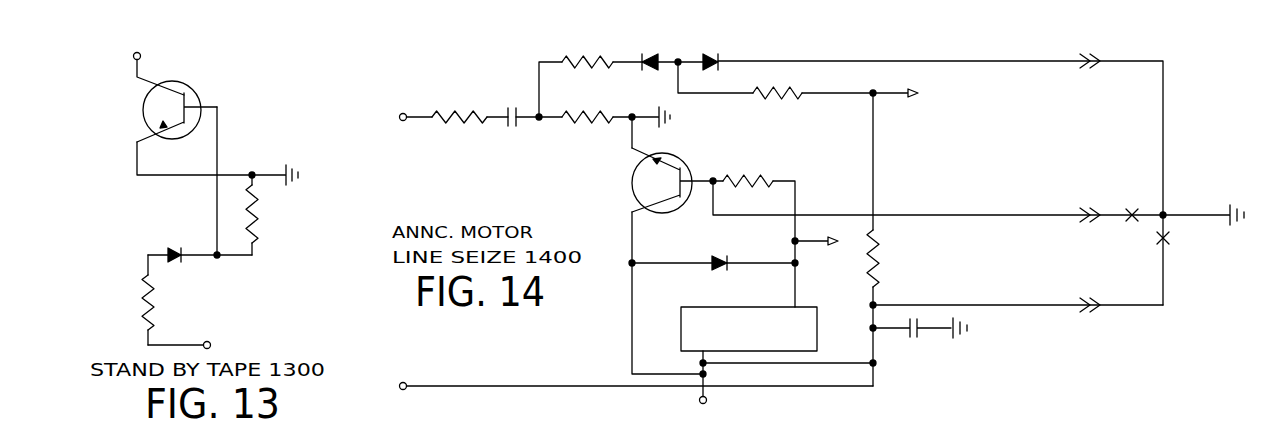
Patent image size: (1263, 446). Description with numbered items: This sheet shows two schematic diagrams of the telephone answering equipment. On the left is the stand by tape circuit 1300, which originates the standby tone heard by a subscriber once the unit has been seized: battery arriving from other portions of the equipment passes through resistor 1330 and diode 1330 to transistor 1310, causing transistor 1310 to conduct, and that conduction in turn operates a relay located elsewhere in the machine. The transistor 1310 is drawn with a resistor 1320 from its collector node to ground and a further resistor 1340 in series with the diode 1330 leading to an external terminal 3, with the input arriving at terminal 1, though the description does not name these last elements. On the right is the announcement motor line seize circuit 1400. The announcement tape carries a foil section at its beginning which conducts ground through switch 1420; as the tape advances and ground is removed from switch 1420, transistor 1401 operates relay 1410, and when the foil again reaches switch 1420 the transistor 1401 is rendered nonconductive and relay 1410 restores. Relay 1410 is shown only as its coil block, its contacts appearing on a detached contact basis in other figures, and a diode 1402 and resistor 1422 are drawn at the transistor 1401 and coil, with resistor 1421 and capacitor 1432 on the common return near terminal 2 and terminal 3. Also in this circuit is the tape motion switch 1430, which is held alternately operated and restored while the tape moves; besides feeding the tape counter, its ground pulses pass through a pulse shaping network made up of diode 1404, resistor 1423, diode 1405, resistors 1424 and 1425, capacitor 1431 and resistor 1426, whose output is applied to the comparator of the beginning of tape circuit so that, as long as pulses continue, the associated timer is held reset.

In FIG. 13, the stand by tape circuit 1300 is at (213, 195).
In FIG. 13, the transistor 1310 is at (201, 90).
In FIG. 13, the resistor 1320 is at (260, 210).
In FIG. 13, the diode 1330 is at (170, 248).
In FIG. 13, the resistor 1340 is at (160, 292).
In FIG. 14, the announcement motor line seize circuit 1400 is at (816, 222).
In FIG. 14, the transistor 1401 is at (686, 159).
In FIG. 14, the diode 1402 is at (717, 256).
In FIG. 14, the diode 1404 is at (702, 51).
In FIG. 14, the diode 1405 is at (648, 50).
In FIG. 14, the relay 1410 is at (700, 306).
In FIG. 14, the switch 1420 is at (1133, 204).
In FIG. 14, the resistor 1421 is at (880, 268).
In FIG. 14, the resistor 1422 is at (753, 174).
In FIG. 14, the resistor 1423 is at (799, 88).
In FIG. 14, the resistor 1424 is at (611, 72).
In FIG. 14, the resistor 1425 is at (589, 128).
In FIG. 14, the resistor 1426 is at (458, 105).
In FIG. 14, the tape motion switch 1430 is at (1175, 192).
In FIG. 14, the capacitor 1431 is at (507, 130).
In FIG. 14, the capacitor 1432 is at (912, 343).
In FIG. 13, the terminal 1 is at (140, 52).
In FIG. 14, the terminal 1 is at (397, 126).
In FIG. 14, the terminal 2 is at (709, 403).
In FIG. 13, the terminal 3 is at (204, 338).
In FIG. 14, the terminal 3 is at (402, 383).